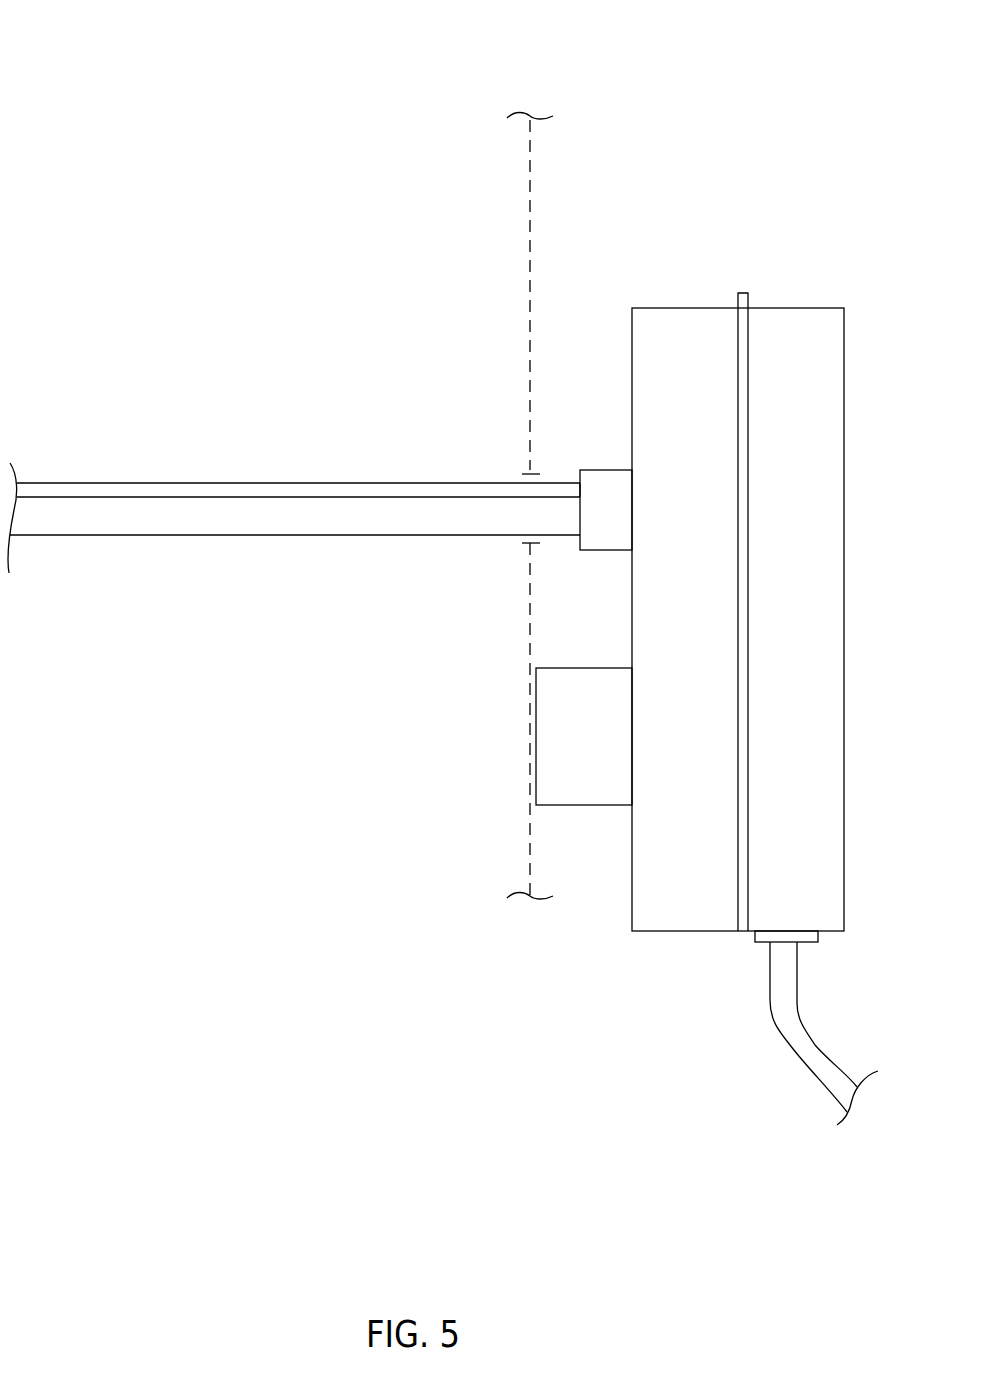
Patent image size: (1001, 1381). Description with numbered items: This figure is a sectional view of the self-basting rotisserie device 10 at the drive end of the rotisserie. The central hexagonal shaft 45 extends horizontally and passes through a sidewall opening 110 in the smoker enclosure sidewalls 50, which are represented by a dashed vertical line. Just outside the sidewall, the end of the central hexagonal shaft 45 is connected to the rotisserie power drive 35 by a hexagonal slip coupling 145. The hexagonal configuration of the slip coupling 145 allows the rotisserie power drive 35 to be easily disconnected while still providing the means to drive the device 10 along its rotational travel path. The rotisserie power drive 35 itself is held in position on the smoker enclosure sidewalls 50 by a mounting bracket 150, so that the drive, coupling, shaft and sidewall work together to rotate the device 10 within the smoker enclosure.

The device 10 is at (102, 183).
The rotisserie power drive 35 is at (787, 326).
The central hexagonal shaft 45 is at (165, 513).
The smoker enclosure sidewalls 50 is at (528, 330).
The sidewall opening 110 is at (517, 478).
The hexagonal slip coupling 145 is at (606, 533).
The mounting bracket 150 is at (557, 792).